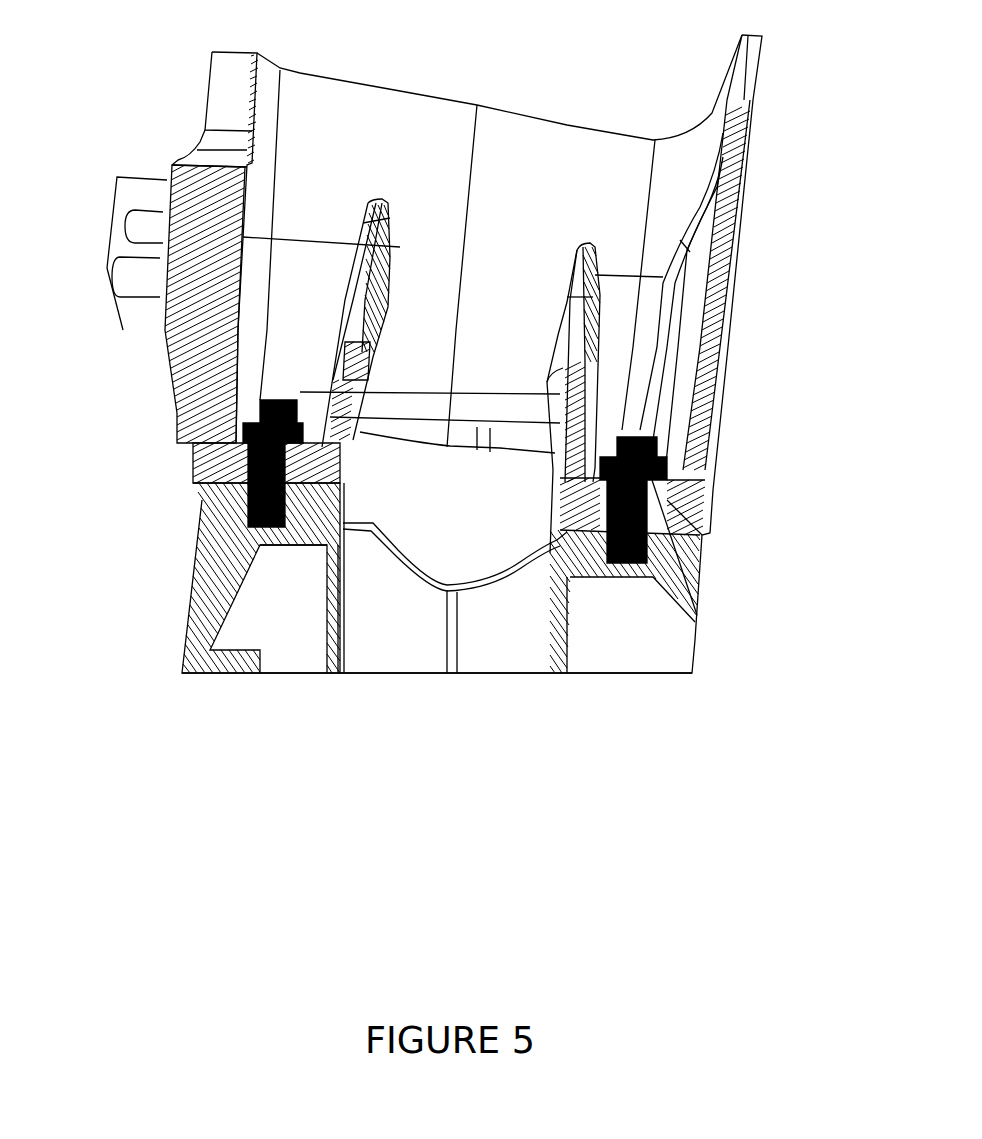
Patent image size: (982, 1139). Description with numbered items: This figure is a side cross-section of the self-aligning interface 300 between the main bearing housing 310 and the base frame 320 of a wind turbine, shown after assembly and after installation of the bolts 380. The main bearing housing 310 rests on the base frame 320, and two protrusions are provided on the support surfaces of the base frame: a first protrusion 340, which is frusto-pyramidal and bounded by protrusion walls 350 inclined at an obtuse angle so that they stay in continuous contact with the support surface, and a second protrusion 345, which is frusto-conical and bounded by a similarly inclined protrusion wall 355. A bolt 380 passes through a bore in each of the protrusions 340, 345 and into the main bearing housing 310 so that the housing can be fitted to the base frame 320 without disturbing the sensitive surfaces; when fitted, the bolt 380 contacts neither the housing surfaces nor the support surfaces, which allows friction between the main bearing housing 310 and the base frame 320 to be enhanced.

The self-aligning interface 300 is at (437, 413).
The main bearing housing 310 is at (230, 90).
The base frame 320 is at (295, 648).
The first protrusion 340 is at (247, 467).
The second protrusion 345 is at (650, 517).
The protrusion walls 350 is at (238, 478).
The protrusion wall 355 is at (657, 513).
The bolt 380 is at (262, 410).